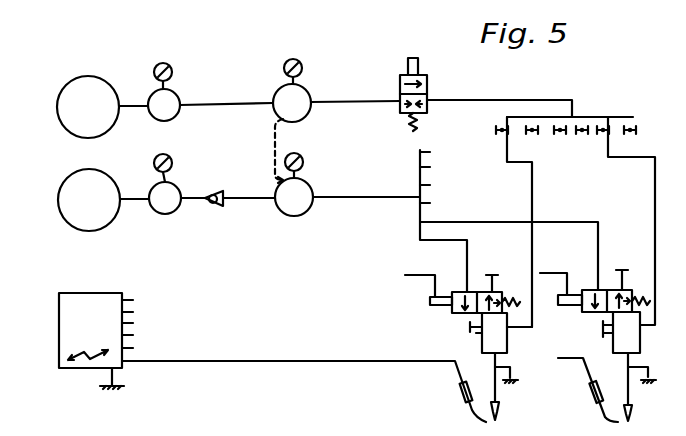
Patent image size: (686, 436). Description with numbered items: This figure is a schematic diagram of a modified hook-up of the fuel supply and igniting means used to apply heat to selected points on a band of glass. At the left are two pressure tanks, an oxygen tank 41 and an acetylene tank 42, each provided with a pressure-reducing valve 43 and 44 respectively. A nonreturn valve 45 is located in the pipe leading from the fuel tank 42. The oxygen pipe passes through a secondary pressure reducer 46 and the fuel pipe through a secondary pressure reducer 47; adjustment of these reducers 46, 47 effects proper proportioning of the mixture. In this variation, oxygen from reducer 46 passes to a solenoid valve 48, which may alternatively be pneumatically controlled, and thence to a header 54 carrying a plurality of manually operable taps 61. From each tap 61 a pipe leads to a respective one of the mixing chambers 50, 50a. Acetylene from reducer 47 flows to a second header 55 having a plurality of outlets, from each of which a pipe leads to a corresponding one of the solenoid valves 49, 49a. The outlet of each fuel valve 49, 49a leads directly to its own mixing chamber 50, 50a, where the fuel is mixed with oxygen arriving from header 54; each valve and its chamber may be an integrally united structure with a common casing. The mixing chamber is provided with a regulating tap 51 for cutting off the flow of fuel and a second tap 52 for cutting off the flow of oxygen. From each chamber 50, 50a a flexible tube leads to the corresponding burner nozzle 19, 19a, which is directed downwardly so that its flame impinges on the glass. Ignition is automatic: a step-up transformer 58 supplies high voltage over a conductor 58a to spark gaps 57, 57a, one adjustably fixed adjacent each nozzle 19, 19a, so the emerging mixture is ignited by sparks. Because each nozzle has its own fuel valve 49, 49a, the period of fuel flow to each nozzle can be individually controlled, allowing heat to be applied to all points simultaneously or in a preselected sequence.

The pressure tank 41 is at (110, 123).
The pressure tank 42 is at (109, 217).
The pressure-reducing valve 43 is at (178, 112).
The pressure-reducing valve 44 is at (176, 189).
The nonreturn valve 45 is at (212, 207).
The secondary pressure reducer 46 is at (305, 94).
The secondary pressure reducer 47 is at (301, 215).
The solenoid valve 48 is at (427, 82).
The solenoid valve 49 is at (456, 306).
The solenoid valve 49a is at (586, 288).
The mixing chamber 50 is at (508, 343).
The mixing chamber 50a is at (604, 332).
The regulating tap 51 is at (490, 273).
The tap 52 is at (470, 330).
The header 54 is at (610, 115).
The header 55 is at (418, 221).
The spark gap 57 is at (461, 398).
The spark gap 57a is at (591, 392).
The step-up transformer 58 is at (110, 318).
The line 58a is at (270, 359).
The manually operable tap 61 is at (500, 132).
The burner nozzle 19 is at (502, 416).
The burner nozzle 19a is at (635, 419).